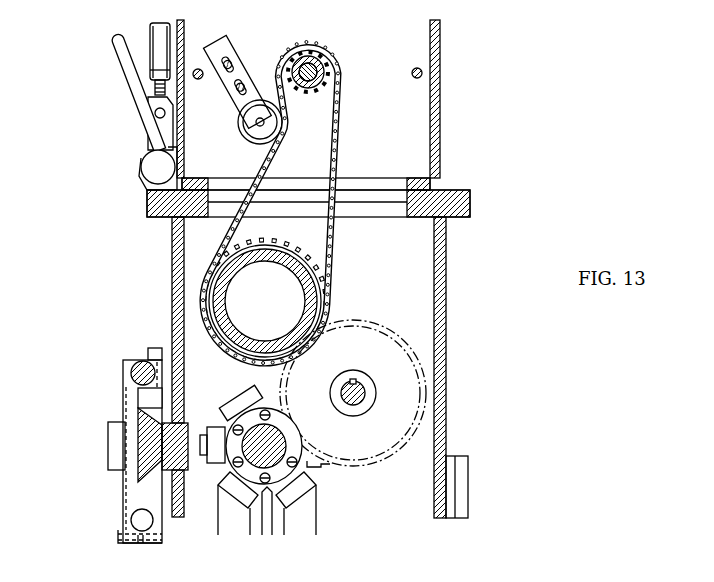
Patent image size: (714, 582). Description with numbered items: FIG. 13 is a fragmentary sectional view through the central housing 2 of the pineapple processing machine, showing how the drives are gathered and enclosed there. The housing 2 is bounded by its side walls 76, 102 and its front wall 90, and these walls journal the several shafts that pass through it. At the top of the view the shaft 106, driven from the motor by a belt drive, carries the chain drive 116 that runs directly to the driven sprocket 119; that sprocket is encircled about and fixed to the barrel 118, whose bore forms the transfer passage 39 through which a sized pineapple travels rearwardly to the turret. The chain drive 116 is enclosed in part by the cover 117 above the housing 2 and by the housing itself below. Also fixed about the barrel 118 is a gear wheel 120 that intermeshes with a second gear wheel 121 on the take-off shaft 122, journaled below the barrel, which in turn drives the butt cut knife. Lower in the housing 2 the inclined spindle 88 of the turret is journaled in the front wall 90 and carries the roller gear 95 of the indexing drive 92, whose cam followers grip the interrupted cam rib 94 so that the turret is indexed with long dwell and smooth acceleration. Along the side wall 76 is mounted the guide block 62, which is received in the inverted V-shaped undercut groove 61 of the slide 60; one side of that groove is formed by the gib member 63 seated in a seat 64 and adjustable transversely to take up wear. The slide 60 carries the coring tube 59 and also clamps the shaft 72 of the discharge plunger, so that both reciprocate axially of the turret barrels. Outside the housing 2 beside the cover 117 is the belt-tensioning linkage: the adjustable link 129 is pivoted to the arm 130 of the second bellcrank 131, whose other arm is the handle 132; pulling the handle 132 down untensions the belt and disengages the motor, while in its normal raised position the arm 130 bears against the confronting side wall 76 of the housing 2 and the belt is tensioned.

The housing 2 is at (449, 279).
The transfer passage 39 is at (273, 316).
The coring tube 59 is at (146, 511).
The slide 60 is at (134, 442).
The undercut groove 61 is at (146, 476).
The guide block 62 is at (138, 437).
The gib member 63 is at (157, 405).
The seat 64 is at (137, 400).
The shaft 72 is at (139, 367).
The side wall 76 is at (172, 302).
The spindle 88 is at (285, 440).
The front wall 90 is at (397, 268).
The indexing drive 92 is at (317, 517).
The cam rib 94 is at (272, 521).
The roller gear 95 is at (236, 396).
The side wall 102 is at (446, 335).
The shaft 106 is at (330, 74).
The chain drive 116 is at (341, 153).
The cover 117 is at (440, 100).
The barrel 118 is at (265, 266).
The driven sprocket 119 is at (269, 244).
The gear wheel 120 is at (326, 303).
The second gear wheel 121 is at (392, 328).
The take-off shaft 122 is at (362, 392).
The adjustable link 129 is at (150, 42).
The arm 130 is at (167, 135).
The second bellcrank 131 is at (141, 133).
The handle 132 is at (124, 80).